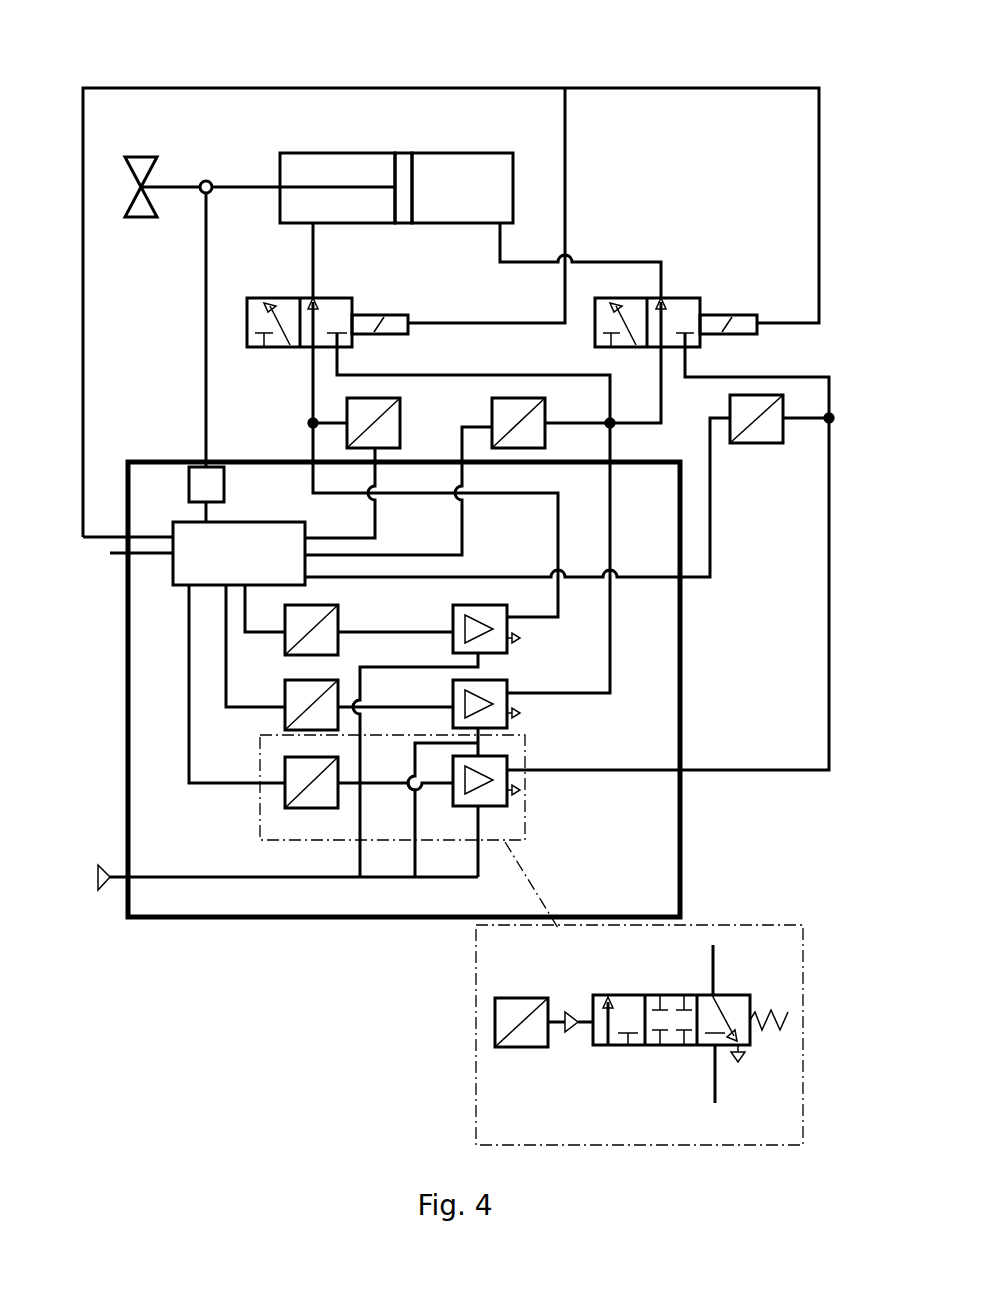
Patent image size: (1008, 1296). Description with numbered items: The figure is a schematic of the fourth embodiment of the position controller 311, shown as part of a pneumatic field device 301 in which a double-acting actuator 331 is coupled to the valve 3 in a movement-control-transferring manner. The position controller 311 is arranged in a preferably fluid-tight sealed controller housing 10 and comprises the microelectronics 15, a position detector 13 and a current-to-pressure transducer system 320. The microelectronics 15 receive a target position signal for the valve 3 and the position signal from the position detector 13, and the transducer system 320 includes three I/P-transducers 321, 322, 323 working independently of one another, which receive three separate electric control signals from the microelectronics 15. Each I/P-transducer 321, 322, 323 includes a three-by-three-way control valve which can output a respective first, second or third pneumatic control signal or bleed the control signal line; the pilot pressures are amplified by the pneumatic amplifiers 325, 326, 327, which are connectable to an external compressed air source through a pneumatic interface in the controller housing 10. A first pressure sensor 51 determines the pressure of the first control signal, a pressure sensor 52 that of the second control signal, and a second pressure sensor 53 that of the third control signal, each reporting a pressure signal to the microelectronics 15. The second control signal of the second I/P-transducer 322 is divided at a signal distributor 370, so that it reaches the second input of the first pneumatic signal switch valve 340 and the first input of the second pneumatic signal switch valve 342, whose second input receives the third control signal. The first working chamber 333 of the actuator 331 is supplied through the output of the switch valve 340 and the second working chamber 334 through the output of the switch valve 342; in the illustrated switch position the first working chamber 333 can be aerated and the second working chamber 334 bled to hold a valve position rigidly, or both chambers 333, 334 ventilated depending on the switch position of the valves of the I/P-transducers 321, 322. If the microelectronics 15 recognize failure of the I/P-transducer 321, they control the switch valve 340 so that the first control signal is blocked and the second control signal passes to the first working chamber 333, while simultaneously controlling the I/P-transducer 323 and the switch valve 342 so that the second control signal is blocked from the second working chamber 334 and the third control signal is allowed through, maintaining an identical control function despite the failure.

The valve 3 is at (125, 157).
The pneumatic field device 301 is at (438, 84).
The double-acting actuator 331 is at (283, 158).
The first working chamber 333 is at (348, 172).
The second working chamber 334 is at (475, 188).
The position controller 311 is at (660, 221).
The first pneumatic signal switch valve 340 is at (335, 308).
The second pneumatic signal switch valve 342 is at (688, 307).
The first pressure sensor 51 is at (378, 405).
The pressure sensor 52 is at (527, 410).
The second pressure sensor 53 is at (760, 408).
The signal distributor 370 is at (608, 420).
The position detector 13 is at (200, 486).
The microelectronics 15 is at (192, 570).
The controller housing 10 is at (197, 920).
The current-to-pressure transducer system 320 is at (250, 735).
The first I/P-transducer 321 is at (362, 648).
The second I/P-transducer 322 is at (370, 726).
The third I/P-transducer 323 is at (353, 810).
The first pneumatic amplifier 325 is at (507, 640).
The second pneumatic amplifier 326 is at (553, 696).
The third pneumatic amplifier 327 is at (573, 1007).